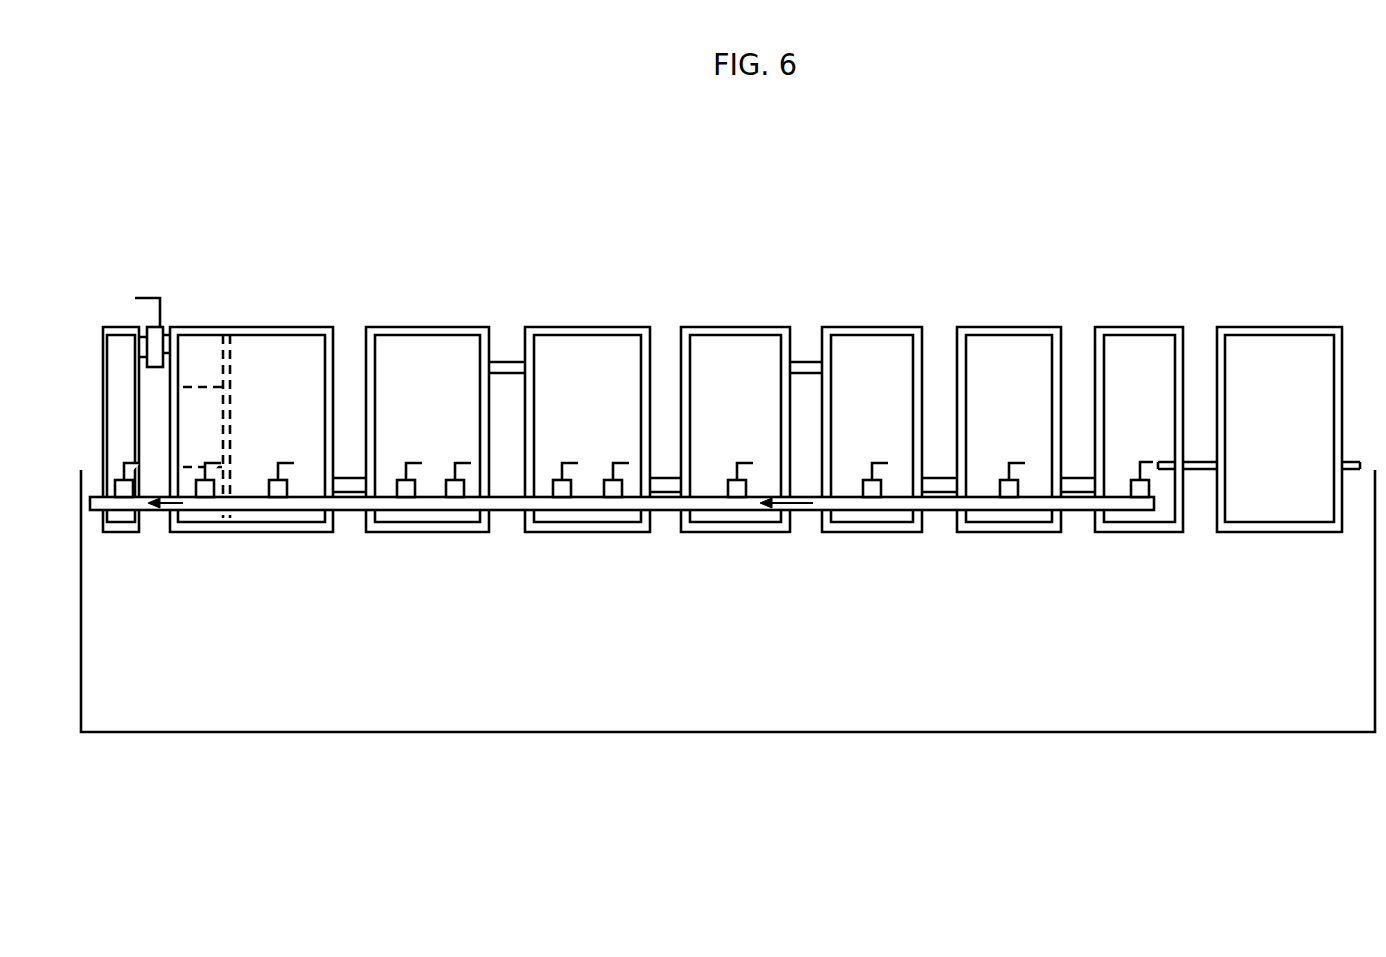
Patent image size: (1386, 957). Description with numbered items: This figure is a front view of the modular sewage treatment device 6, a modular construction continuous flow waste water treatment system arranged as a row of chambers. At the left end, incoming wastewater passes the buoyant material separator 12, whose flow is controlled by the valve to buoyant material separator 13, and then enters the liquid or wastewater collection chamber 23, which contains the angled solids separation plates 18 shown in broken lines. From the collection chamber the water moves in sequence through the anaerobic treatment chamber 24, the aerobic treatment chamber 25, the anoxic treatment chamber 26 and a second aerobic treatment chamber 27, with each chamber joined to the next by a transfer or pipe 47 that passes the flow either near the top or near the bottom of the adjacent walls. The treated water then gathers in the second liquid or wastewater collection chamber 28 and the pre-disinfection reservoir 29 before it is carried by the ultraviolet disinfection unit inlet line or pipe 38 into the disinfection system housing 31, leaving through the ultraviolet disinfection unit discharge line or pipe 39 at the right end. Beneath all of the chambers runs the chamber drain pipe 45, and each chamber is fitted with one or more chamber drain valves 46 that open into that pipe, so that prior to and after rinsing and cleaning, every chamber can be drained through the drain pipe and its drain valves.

The modular sewage treatment device 6 is at (733, 732).
The buoyant material separator 12 is at (118, 338).
The valve to buoyant material separator 13 is at (160, 298).
The angled solids separation plates 18 is at (207, 387).
The liquid or wastewater collection chamber 23 is at (255, 340).
The anaerobic treatment chamber 24 is at (430, 340).
The aerobic treatment chamber 25 is at (590, 340).
The anoxic treatment chamber 26 is at (736, 340).
The aerobic treatment chamber 27 is at (876, 340).
The liquid or wastewater collection chamber 28 is at (1008, 340).
The pre-disinfection reservoir 29 is at (1138, 340).
The disinfection system housing 31 is at (1275, 340).
The ultraviolet disinfection unit inlet line or pipe 38 is at (1203, 469).
The ultraviolet disinfection unit discharge line or pipe 39 is at (1353, 469).
The chamber drain pipe 45 is at (805, 510).
The chamber drain valves 46 is at (125, 498).
The transfer pipe 47 is at (350, 478).